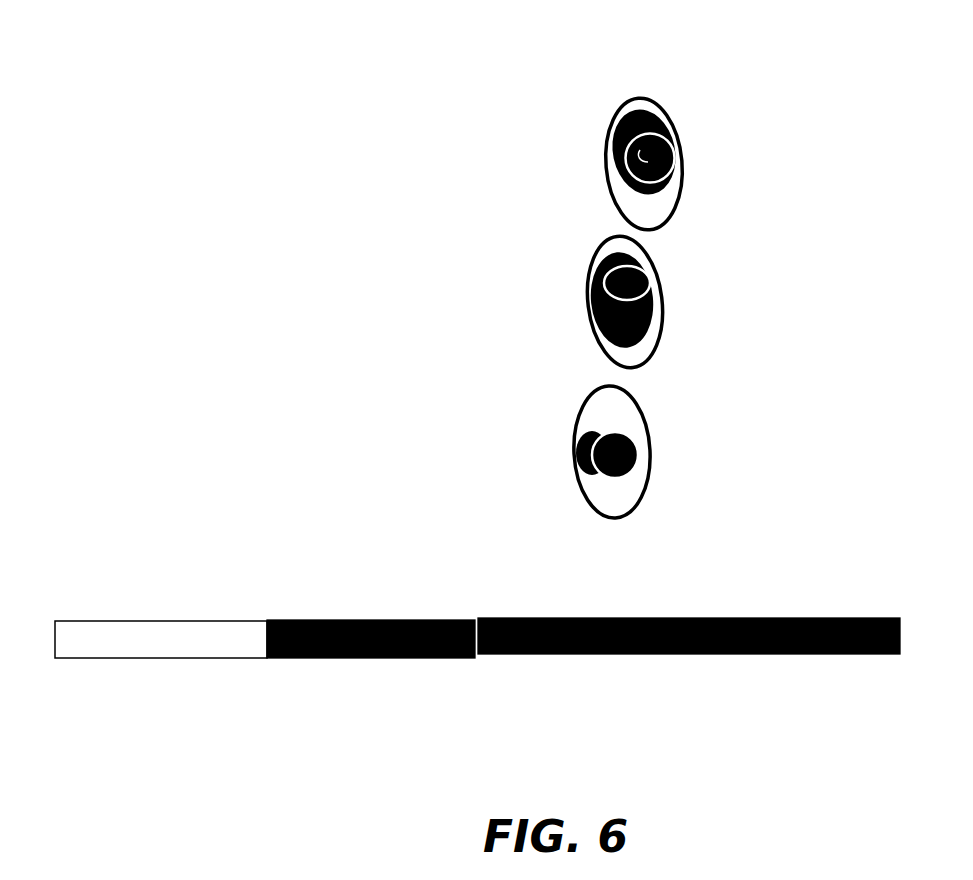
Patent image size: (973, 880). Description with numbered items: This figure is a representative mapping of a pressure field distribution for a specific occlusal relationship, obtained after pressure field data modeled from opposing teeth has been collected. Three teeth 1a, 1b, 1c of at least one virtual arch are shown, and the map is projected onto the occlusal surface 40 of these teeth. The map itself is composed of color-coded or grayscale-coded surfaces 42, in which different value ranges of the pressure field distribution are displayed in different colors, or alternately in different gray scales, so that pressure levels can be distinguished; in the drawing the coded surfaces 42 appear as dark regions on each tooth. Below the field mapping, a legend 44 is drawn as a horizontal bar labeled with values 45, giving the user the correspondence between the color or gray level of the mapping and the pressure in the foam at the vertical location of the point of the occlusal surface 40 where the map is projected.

The tooth 1a is at (653, 149).
The tooth 1b is at (662, 315).
The tooth 1c is at (650, 462).
The occlusal surface 40 is at (627, 205).
The color-coded or grayscale-coded surfaces 42 is at (623, 133).
The legend 44 is at (677, 572).
The values 45 is at (377, 687).